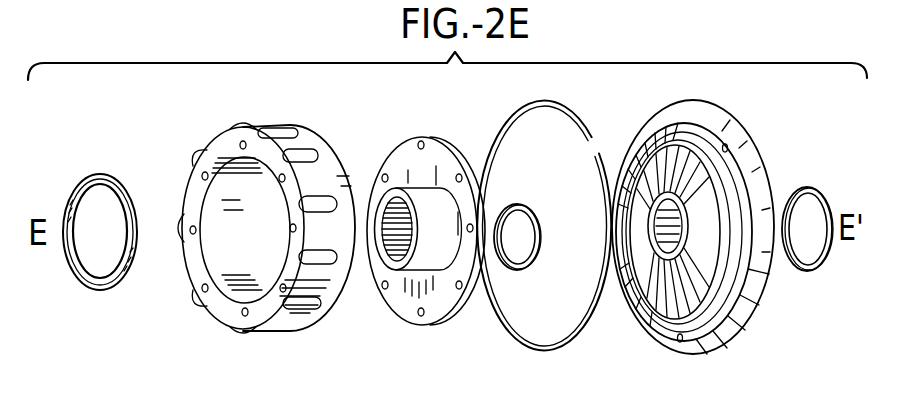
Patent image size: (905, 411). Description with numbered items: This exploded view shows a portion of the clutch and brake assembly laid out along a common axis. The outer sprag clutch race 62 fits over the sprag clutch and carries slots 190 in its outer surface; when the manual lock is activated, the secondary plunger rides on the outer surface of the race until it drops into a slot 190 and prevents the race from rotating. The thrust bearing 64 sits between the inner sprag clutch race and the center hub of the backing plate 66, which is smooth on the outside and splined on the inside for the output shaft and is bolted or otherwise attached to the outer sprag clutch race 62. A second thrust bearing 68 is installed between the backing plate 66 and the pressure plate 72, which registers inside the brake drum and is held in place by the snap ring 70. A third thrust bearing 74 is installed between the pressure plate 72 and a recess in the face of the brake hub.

The outer sprag clutch race 62 is at (240, 330).
The thrust bearing 64 is at (90, 290).
The backing plate 66 is at (424, 332).
The thrust bearing 68 is at (530, 215).
The snap ring 70 is at (537, 352).
The pressure plate 72 is at (673, 351).
The thrust bearing 74 is at (808, 273).
The slot 190 is at (318, 153).